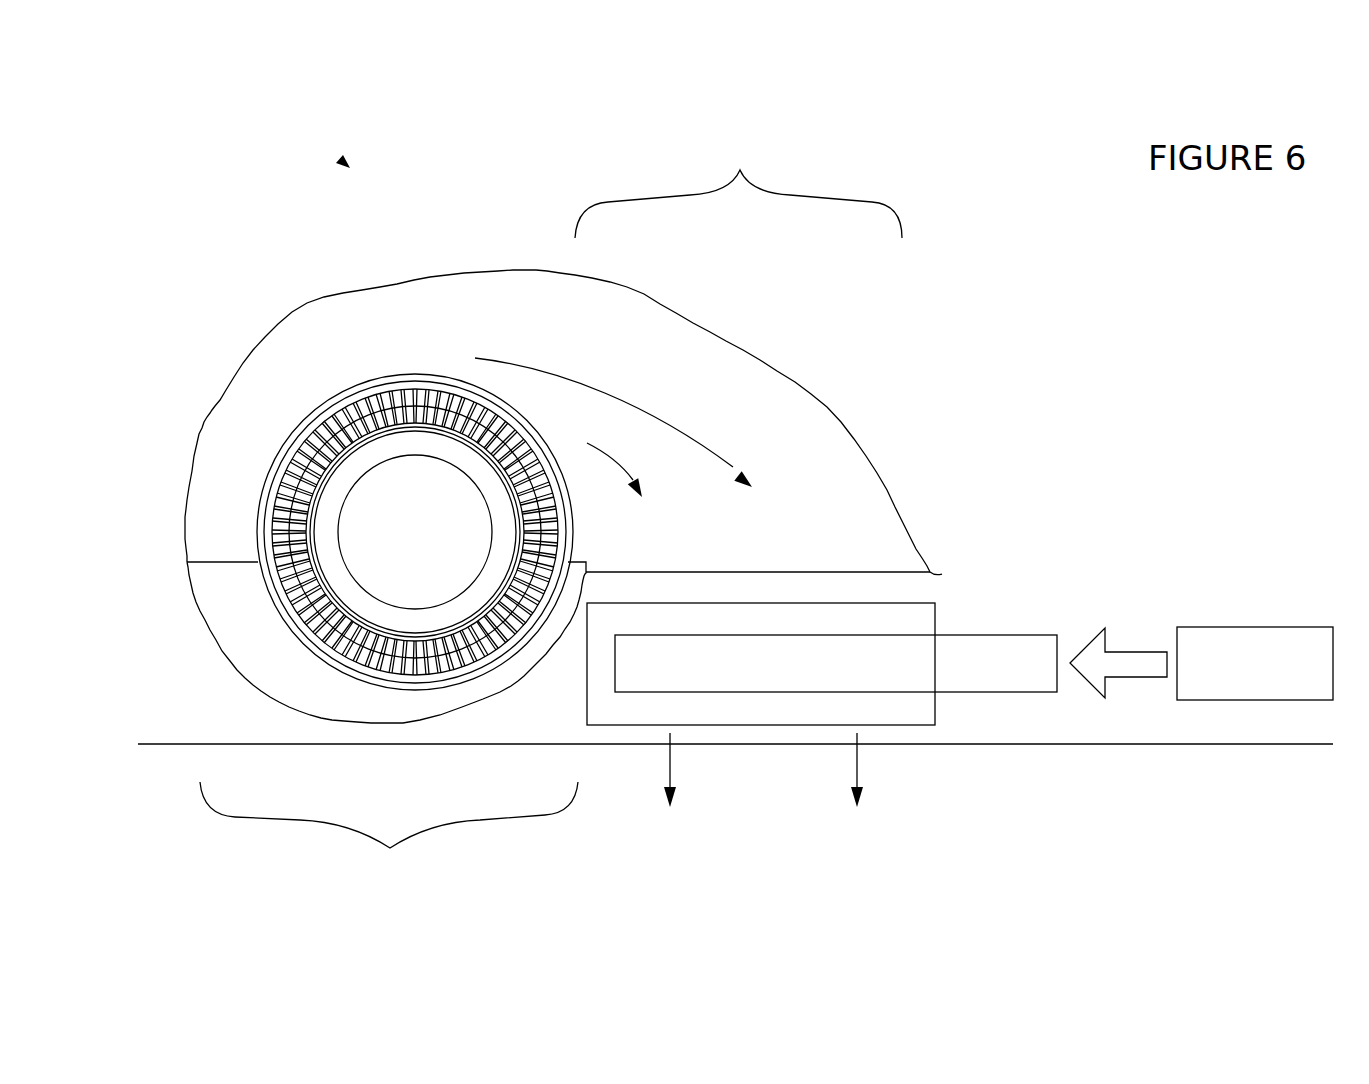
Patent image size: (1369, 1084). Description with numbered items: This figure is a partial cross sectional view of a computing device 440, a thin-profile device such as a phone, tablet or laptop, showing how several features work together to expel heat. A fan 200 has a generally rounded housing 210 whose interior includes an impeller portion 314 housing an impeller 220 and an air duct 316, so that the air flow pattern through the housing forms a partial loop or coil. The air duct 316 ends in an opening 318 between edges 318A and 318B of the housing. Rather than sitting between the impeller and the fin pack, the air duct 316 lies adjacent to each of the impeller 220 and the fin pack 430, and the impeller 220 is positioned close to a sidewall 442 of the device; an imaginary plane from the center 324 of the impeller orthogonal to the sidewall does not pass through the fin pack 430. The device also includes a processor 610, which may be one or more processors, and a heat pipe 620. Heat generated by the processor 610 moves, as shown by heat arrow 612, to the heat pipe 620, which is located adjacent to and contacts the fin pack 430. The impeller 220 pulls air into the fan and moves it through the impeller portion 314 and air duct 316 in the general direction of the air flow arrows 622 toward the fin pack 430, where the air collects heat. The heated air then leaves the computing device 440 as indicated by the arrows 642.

The computing device 440 is at (343, 161).
The fan 200 is at (313, 310).
The impeller 220 is at (290, 415).
The housing 210 is at (193, 443).
The center 324 is at (413, 533).
The air duct 316 is at (738, 185).
The air flow arrows 622 is at (587, 443).
The edge 318A is at (593, 572).
The opening 318 is at (833, 572).
The edge 318B is at (940, 574).
The fin pack 430 is at (936, 624).
The processor 610 is at (1275, 627).
The heat pipe 620 is at (973, 692).
The heat arrow 612 is at (1138, 677).
The sidewall 442 is at (975, 744).
The arrows 642 is at (857, 768).
The impeller portion 314 is at (389, 834).